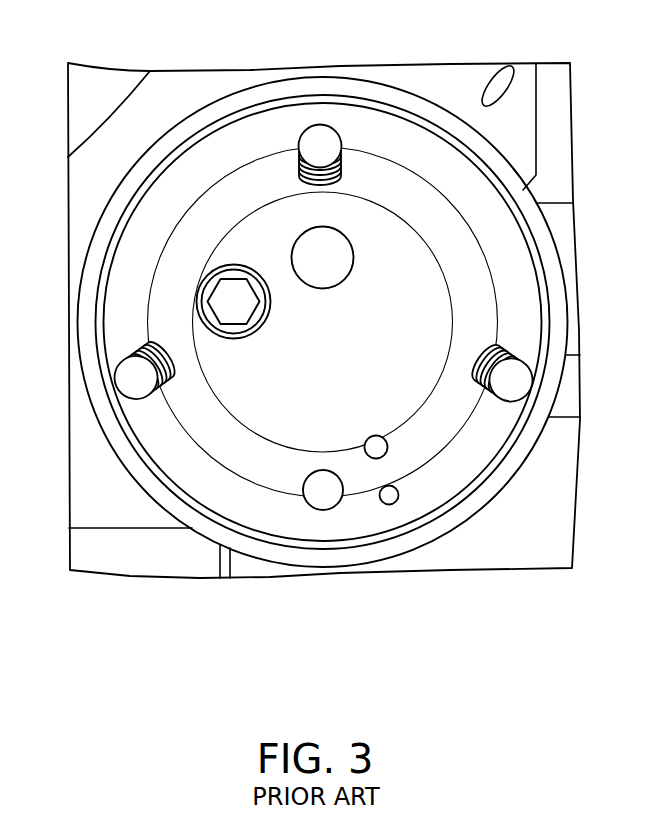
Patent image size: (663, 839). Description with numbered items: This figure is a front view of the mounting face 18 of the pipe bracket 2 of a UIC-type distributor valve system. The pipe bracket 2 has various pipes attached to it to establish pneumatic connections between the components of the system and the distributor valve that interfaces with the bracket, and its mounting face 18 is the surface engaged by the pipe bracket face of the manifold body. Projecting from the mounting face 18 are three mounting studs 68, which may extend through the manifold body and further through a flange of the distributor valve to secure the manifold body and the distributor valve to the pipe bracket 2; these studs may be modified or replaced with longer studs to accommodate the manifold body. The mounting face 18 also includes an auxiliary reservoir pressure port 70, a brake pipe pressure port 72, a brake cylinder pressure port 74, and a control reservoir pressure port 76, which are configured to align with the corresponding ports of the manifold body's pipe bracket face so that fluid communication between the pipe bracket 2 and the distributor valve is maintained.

The pipe bracket 2 is at (412, 183).
The mounting face 18 is at (522, 190).
The mounting studs 68 is at (327, 140).
The auxiliary reservoir pressure port 70 is at (291, 257).
The brake pipe pressure port 72 is at (374, 436).
The brake cylinder pressure port 74 is at (323, 510).
The control reservoir pressure port 76 is at (389, 505).